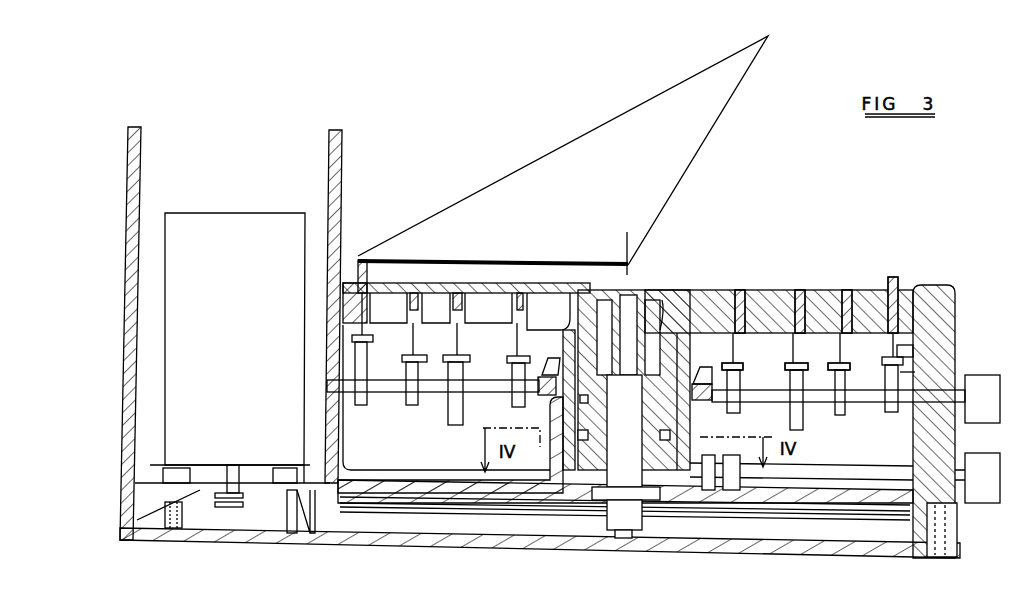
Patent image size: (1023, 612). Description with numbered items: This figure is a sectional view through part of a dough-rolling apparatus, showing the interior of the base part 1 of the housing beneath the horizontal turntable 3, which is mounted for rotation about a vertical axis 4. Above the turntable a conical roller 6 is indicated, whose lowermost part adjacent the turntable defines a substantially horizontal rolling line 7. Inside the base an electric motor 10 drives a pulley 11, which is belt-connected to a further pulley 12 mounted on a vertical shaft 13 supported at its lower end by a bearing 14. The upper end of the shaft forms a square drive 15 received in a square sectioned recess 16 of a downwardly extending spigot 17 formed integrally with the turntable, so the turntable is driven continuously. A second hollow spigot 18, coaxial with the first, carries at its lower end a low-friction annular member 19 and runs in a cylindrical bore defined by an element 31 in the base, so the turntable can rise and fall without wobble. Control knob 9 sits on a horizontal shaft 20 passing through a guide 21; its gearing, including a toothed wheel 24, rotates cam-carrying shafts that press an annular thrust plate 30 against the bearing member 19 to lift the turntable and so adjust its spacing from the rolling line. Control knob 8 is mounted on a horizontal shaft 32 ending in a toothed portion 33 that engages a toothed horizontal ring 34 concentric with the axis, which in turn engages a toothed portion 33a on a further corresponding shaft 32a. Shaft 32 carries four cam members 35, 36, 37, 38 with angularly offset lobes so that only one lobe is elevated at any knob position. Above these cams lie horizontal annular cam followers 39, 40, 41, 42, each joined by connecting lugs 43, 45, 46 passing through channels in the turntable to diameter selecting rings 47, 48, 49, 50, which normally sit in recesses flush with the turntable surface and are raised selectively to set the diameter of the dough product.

The base part 1 is at (127, 385).
The turntable 3 is at (770, 290).
The vertical axis 4 is at (632, 285).
The roller 6 is at (563, 155).
The rolling line 7 is at (553, 265).
The control knob 8 is at (982, 399).
The control knob 9 is at (977, 478).
The electric motor 10 is at (232, 348).
The pulley 11 is at (232, 507).
The pulley 12 is at (497, 515).
The vertical shaft 13 is at (626, 437).
The bearing 14 is at (627, 537).
The square drive 15 is at (675, 330).
The square sectioned recess 16 is at (663, 300).
The spigot 17 is at (604, 300).
The second hollow spigot 18 is at (584, 403).
The annular member 19 is at (590, 436).
The horizontal shaft 20 is at (860, 463).
The guide 21 is at (740, 485).
The toothed wheel 24 is at (710, 490).
The thrust plate 30 is at (655, 440).
The element 31 is at (572, 328).
The horizontal shaft 32 is at (935, 408).
The horizontal shaft 32a is at (392, 392).
The toothed portion 33 is at (700, 400).
The toothed portion 33a is at (545, 396).
The toothed horizontal ring 34 is at (548, 372).
The cam member 35 is at (890, 412).
The cam member 36 is at (840, 415).
The cam member 37 is at (800, 430).
The cam member 38 is at (740, 405).
The annular cam follower 39 is at (905, 372).
The annular cam follower 40 is at (848, 370).
The annular cam follower 41 is at (800, 370).
The annular cam follower 42 is at (743, 368).
The connecting lug 43 is at (915, 350).
The connecting lug 45 is at (795, 350).
The connecting lug 46 is at (735, 350).
The diameter selecting ring 47 is at (895, 277).
The diameter selecting ring 48 is at (847, 290).
The diameter selecting ring 49 is at (800, 290).
The diameter selecting ring 50 is at (740, 290).